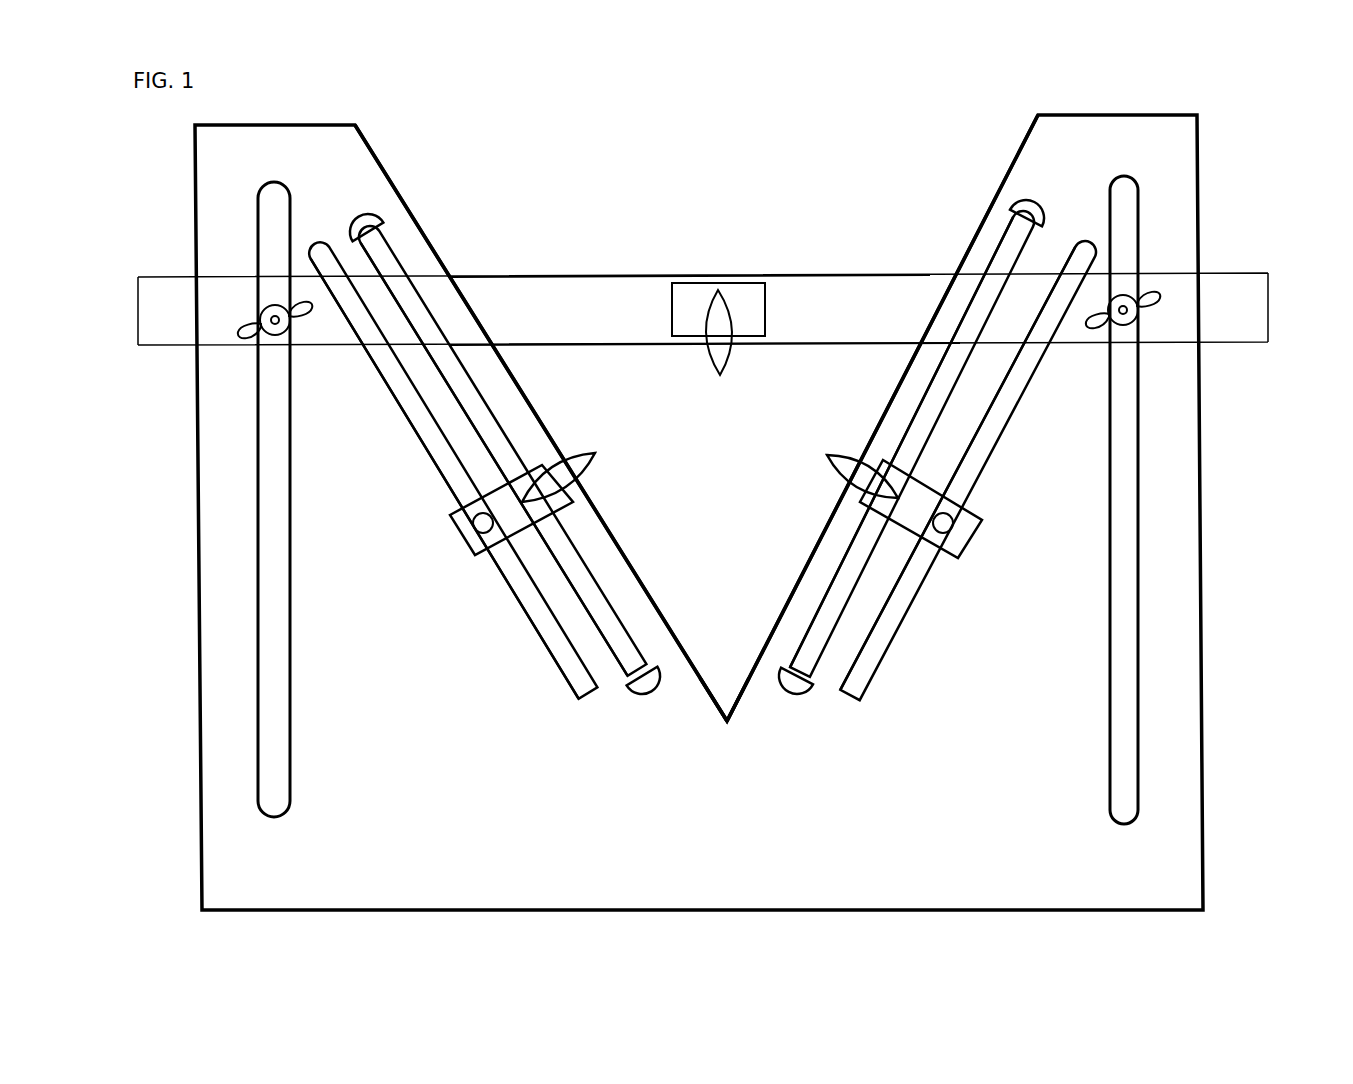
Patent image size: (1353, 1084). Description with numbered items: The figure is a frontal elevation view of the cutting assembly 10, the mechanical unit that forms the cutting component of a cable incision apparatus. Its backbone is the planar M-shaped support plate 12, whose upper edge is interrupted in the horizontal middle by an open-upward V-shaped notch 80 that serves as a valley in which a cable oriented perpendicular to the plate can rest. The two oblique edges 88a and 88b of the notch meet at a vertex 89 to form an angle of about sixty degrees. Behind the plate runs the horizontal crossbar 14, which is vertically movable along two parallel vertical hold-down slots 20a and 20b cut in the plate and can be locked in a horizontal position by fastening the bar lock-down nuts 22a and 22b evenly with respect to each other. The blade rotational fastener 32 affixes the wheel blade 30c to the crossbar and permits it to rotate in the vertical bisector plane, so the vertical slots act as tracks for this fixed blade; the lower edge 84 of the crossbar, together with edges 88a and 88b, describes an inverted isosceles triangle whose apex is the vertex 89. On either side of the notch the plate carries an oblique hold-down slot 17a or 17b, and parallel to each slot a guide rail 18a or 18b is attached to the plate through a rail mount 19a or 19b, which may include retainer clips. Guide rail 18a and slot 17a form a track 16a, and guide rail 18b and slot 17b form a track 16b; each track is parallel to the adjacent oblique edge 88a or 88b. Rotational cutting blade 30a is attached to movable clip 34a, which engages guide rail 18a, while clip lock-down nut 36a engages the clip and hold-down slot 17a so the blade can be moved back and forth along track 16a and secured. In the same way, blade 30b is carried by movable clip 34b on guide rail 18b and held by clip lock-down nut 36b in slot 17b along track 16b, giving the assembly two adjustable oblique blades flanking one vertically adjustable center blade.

The cutting assembly 10 is at (188, 764).
The M-shaped support plate 12 is at (210, 158).
The horizontal crossbar 14 is at (578, 300).
The track 16a is at (469, 471).
The track 16b is at (932, 453).
The oblique hold-down slot 17a is at (545, 632).
The oblique hold-down slot 17b is at (905, 608).
The guide rail 18a is at (597, 592).
The guide rail 18b is at (830, 610).
The rail mount 19a is at (350, 213).
The rail mount 19b is at (1040, 207).
The vertical hold-down slot 20a is at (278, 575).
The vertical hold-down slot 20b is at (1118, 576).
The bar lock-down nut 22a is at (291, 350).
The bar lock-down nut 22b is at (1115, 343).
The rotational cutting blade 30a is at (598, 465).
The rotational cutting blade 30b is at (830, 472).
The rotational cutting blade 30c is at (700, 368).
The blade rotational fastener 32 is at (745, 315).
The movable clip 34a is at (470, 550).
The movable clip 34b is at (955, 546).
The clip lock-down nut 36a is at (473, 523).
The clip lock-down nut 36b is at (953, 525).
The V-shaped notch 80 is at (725, 220).
The lower edge of crossbar 84 is at (792, 352).
The oblique edge 88a is at (528, 386).
The oblique edge 88b is at (893, 388).
The vertex 89 is at (735, 727).